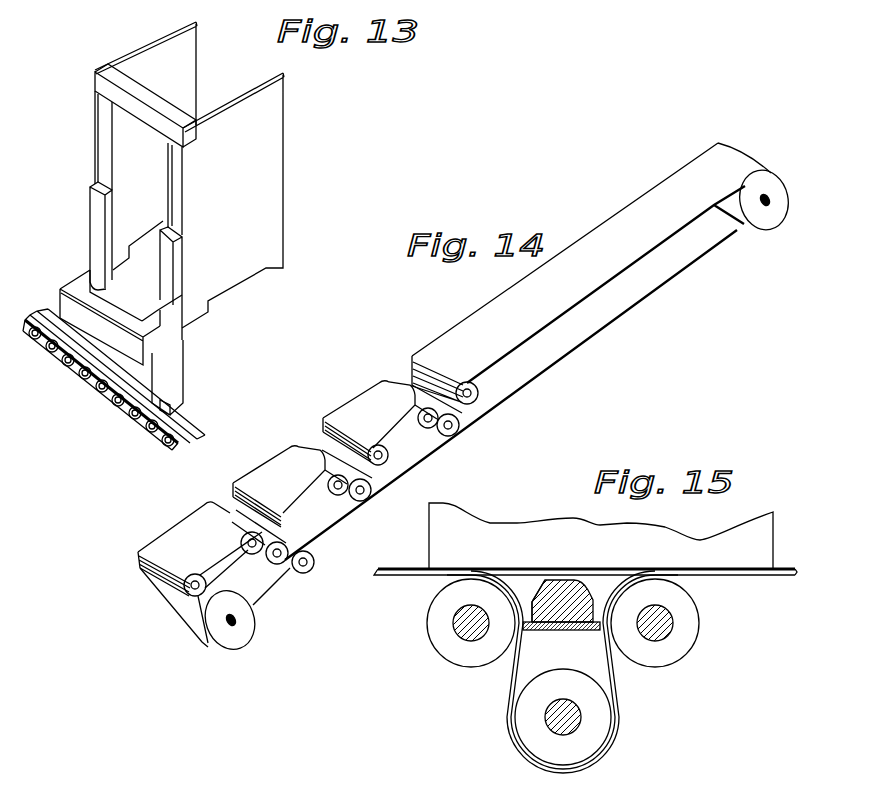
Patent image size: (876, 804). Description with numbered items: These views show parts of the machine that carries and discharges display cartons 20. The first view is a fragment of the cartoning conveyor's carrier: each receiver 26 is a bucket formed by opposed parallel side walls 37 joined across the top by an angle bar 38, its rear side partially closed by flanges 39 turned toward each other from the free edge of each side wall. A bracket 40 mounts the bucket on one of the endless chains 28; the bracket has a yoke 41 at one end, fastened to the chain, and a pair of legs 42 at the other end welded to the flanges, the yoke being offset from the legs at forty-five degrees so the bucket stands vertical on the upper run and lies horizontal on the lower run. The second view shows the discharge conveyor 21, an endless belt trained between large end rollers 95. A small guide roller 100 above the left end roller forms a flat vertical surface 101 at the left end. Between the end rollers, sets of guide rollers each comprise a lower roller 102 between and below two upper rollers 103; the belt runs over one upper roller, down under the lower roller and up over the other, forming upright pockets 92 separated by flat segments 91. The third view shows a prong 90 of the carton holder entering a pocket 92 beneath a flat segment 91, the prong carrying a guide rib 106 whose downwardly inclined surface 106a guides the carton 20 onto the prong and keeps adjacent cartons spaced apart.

In FIG. 15, the display carton 20 is at (536, 524).
In FIG. 14, the discharge conveyor 21 is at (622, 210).
In FIG. 13, the receiver 26 is at (292, 92).
In FIG. 13, the endless chain 28 is at (195, 432).
In FIG. 13, the side wall 37 is at (168, 48).
In FIG. 13, the angle bar 38 is at (152, 97).
In FIG. 13, the flange 39 is at (97, 142).
In FIG. 13, the bracket 40 is at (160, 338).
In FIG. 13, the yoke 41 is at (170, 396).
In FIG. 13, the leg 42 is at (92, 214).
In FIG. 15, the prong 90 is at (558, 632).
In FIG. 14, the flat segment 91 is at (370, 400).
In FIG. 15, the flat segment 91 is at (410, 562).
In FIG. 14, the upright pocket 92 is at (404, 375).
In FIG. 15, the upright pocket 92 is at (612, 668).
In FIG. 14, the end roller 95 is at (776, 177).
In FIG. 14, the guide roller 100 is at (195, 574).
In FIG. 14, the vertical surface 101 is at (175, 607).
In FIG. 14, the lower roller 102 is at (458, 432).
In FIG. 15, the lower roller 102 is at (612, 740).
In FIG. 14, the upper roller 103 is at (478, 394).
In FIG. 15, the upper roller 103 is at (438, 657).
In FIG. 15, the guide rib 106 is at (580, 582).
In FIG. 15, the downwardly inclined surface 106a is at (540, 590).